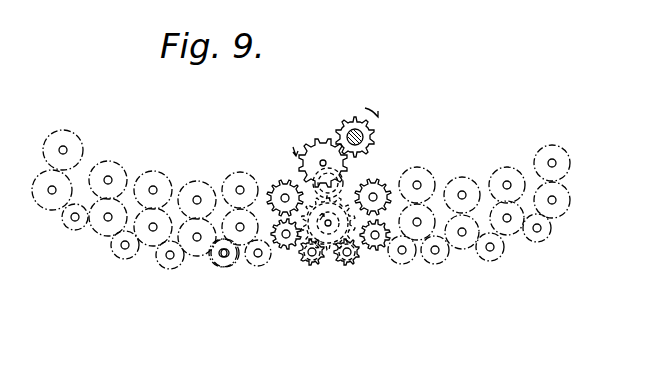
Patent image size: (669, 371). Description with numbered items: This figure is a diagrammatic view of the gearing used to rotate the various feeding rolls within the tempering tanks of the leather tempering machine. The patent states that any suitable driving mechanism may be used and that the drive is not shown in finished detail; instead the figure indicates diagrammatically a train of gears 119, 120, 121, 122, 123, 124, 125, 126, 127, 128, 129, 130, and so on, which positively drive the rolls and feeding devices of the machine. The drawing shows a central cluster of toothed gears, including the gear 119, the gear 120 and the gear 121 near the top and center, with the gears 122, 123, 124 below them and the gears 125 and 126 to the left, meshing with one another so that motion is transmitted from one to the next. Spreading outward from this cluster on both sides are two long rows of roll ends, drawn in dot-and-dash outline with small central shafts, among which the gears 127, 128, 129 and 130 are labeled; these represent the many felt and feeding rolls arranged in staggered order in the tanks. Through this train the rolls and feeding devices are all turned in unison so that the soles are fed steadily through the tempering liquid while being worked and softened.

The gear 119 is at (371, 137).
The gear 120 is at (316, 146).
The gear 121 is at (332, 266).
The gear 122 is at (375, 252).
The gear 123 is at (311, 266).
The gear 124 is at (352, 262).
The gear 125 is at (290, 250).
The gear 126 is at (282, 181).
The gear 127 is at (253, 266).
The gear 128 is at (226, 210).
The gear 129 is at (242, 171).
The gear 130 is at (218, 266).